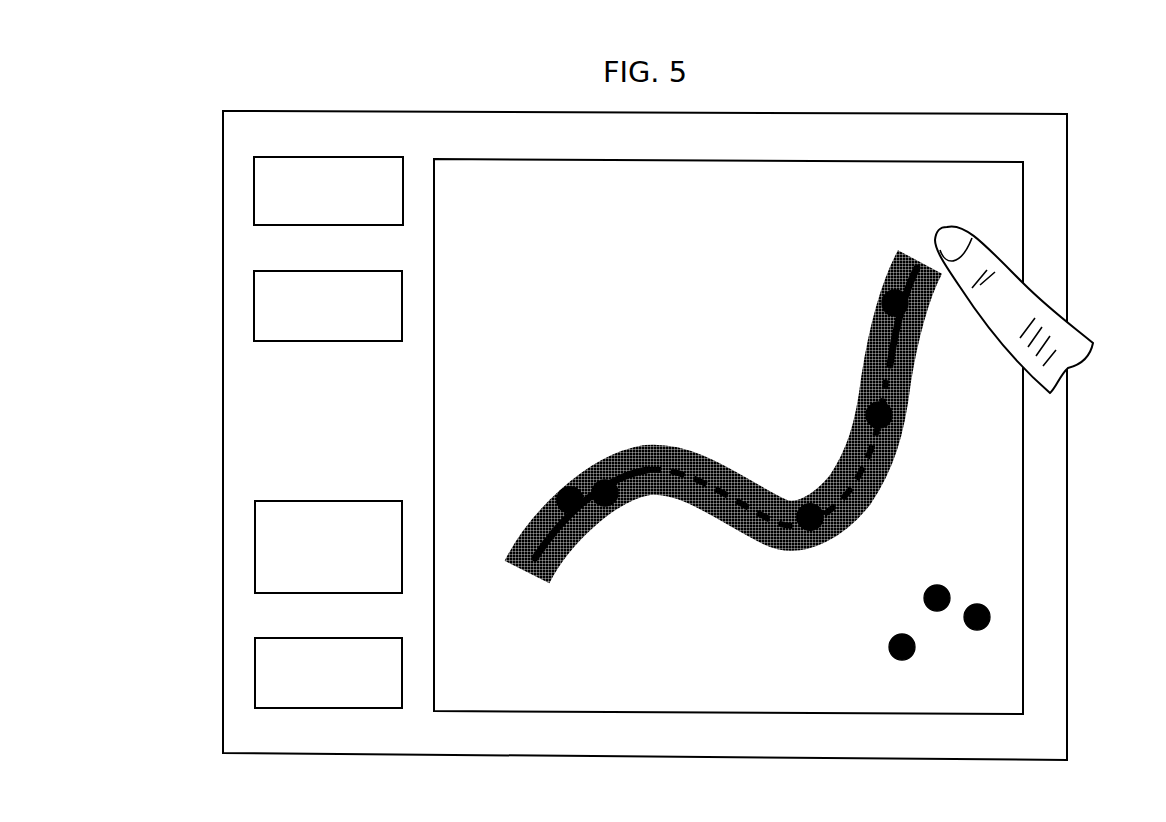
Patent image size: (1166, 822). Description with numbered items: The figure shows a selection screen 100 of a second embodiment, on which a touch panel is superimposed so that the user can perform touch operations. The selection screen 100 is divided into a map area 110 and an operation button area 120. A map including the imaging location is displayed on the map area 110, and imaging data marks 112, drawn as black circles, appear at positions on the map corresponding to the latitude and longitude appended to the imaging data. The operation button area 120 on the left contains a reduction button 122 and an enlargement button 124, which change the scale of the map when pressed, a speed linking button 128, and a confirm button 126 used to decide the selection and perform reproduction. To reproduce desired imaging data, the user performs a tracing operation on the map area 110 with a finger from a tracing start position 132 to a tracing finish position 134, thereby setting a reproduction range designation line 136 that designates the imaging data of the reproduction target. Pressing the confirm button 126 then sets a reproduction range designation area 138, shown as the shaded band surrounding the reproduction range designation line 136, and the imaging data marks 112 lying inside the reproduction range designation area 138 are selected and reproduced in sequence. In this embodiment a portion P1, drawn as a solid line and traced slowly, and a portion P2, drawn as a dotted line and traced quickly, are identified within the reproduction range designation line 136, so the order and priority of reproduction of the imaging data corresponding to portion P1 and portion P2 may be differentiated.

The selection screen 100 is at (315, 97).
The map area 110 is at (883, 193).
The imaging data marks 112 is at (806, 505).
The operation button area 120 is at (256, 429).
The reduction button 122 is at (254, 189).
The enlargement button 124 is at (254, 302).
The confirm button 126 is at (255, 670).
The speed linking button 128 is at (255, 545).
The tracing start position 132 is at (535, 562).
The tracing finish position 134 is at (915, 268).
The reproduction range designation line 136 is at (715, 497).
The reproduction range designation area 138 is at (880, 505).
The portion traced slowly P1 is at (563, 512).
The portion traced quickly P2 is at (778, 535).